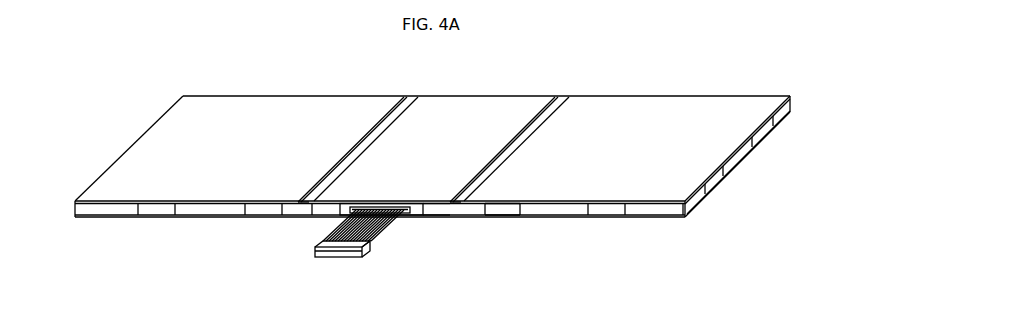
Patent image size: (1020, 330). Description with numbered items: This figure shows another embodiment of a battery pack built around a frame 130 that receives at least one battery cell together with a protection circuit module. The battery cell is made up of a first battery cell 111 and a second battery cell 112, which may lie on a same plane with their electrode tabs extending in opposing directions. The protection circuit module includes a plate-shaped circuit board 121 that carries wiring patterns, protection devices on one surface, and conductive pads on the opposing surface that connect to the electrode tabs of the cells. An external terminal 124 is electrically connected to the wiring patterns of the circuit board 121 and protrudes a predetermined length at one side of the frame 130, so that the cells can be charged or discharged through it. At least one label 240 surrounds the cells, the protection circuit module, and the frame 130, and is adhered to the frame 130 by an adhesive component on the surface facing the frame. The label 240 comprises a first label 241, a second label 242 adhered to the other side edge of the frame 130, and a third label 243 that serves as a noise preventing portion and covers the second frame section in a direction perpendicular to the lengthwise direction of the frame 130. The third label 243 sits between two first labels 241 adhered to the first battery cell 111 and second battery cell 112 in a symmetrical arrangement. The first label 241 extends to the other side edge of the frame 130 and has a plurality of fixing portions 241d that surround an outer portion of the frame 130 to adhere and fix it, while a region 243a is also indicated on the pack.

The first battery cell 111 is at (401, 98).
The second battery cell 112 is at (554, 101).
The circuit board 121 is at (402, 214).
The external terminal 124 is at (338, 252).
The frame 130 is at (659, 209).
The label 240 is at (300, 262).
The first label 241 is at (662, 103).
The second label 242 is at (250, 215).
The third label 243 is at (345, 188).
The pad portion 243a is at (435, 208).
The fixing portions 241d is at (500, 207).